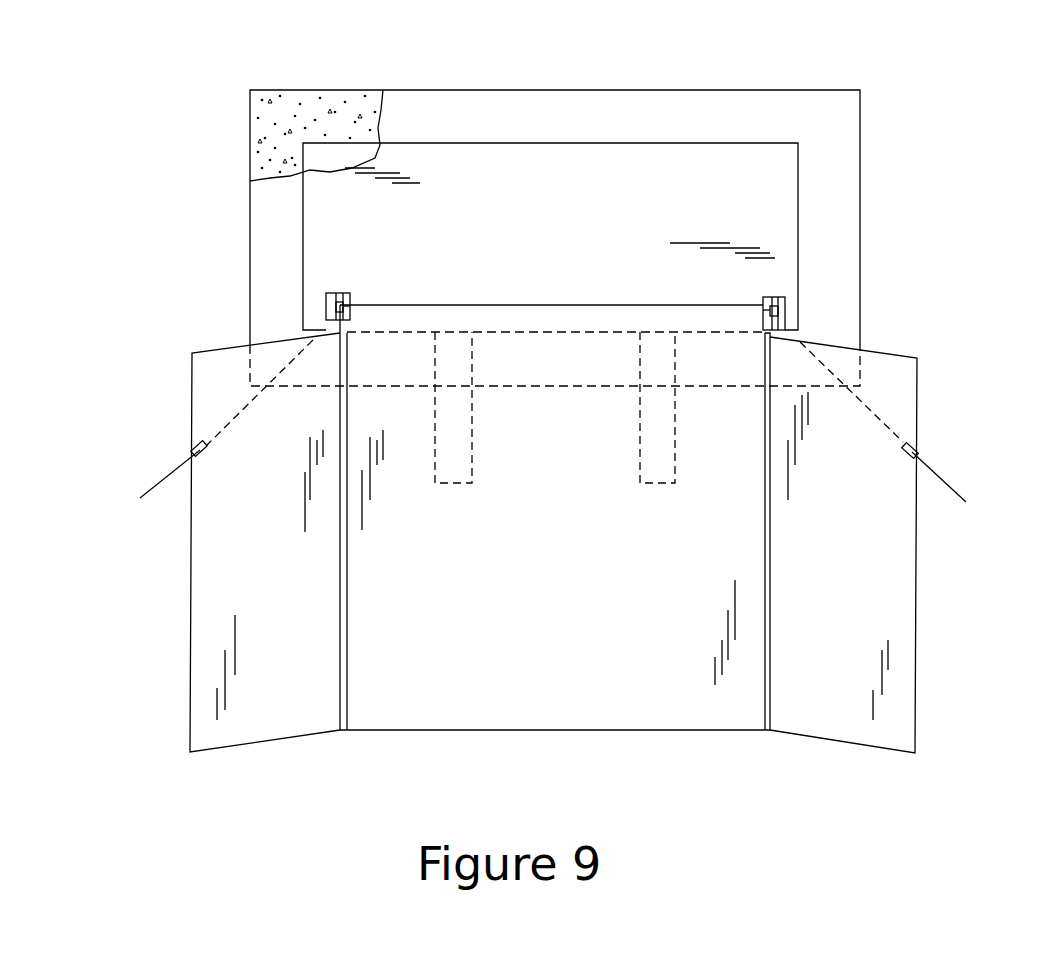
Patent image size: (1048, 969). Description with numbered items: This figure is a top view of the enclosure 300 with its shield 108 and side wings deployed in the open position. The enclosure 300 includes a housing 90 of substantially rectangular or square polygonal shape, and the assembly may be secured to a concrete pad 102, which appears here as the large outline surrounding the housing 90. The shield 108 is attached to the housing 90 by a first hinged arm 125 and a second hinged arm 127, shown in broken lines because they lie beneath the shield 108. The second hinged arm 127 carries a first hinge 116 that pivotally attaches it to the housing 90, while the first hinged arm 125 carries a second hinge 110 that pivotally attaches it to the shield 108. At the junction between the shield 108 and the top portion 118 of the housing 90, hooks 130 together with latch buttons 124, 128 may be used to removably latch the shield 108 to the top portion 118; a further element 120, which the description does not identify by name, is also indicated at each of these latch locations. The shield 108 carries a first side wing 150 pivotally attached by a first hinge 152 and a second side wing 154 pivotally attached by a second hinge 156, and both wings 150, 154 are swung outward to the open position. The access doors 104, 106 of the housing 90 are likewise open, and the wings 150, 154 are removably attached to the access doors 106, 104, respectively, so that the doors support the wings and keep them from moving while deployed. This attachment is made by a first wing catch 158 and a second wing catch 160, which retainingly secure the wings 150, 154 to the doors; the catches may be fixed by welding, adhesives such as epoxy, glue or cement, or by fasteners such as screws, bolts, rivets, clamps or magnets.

The housing 90 is at (480, 150).
The enclosure 300 is at (597, 118).
The concrete pad 102 is at (845, 158).
The top portion 118 is at (735, 184).
The hinge 120 is at (341, 291).
The hooks 130 is at (326, 298).
The latch button 128 is at (334, 310).
The latch button 124 is at (786, 312).
The second hinged arm 127 is at (473, 373).
The first hinged arm 125 is at (640, 373).
The first hinge 116 is at (450, 483).
The second hinge 110 is at (655, 483).
The shield 108 is at (578, 619).
The second hinge 156 is at (347, 622).
The first hinge 152 is at (768, 530).
The second side wing 154 is at (190, 553).
The first side wing 150 is at (917, 548).
The access door 104 is at (165, 473).
The access door 106 is at (940, 477).
The second wing catch 160 is at (195, 442).
The first wing catch 158 is at (916, 442).